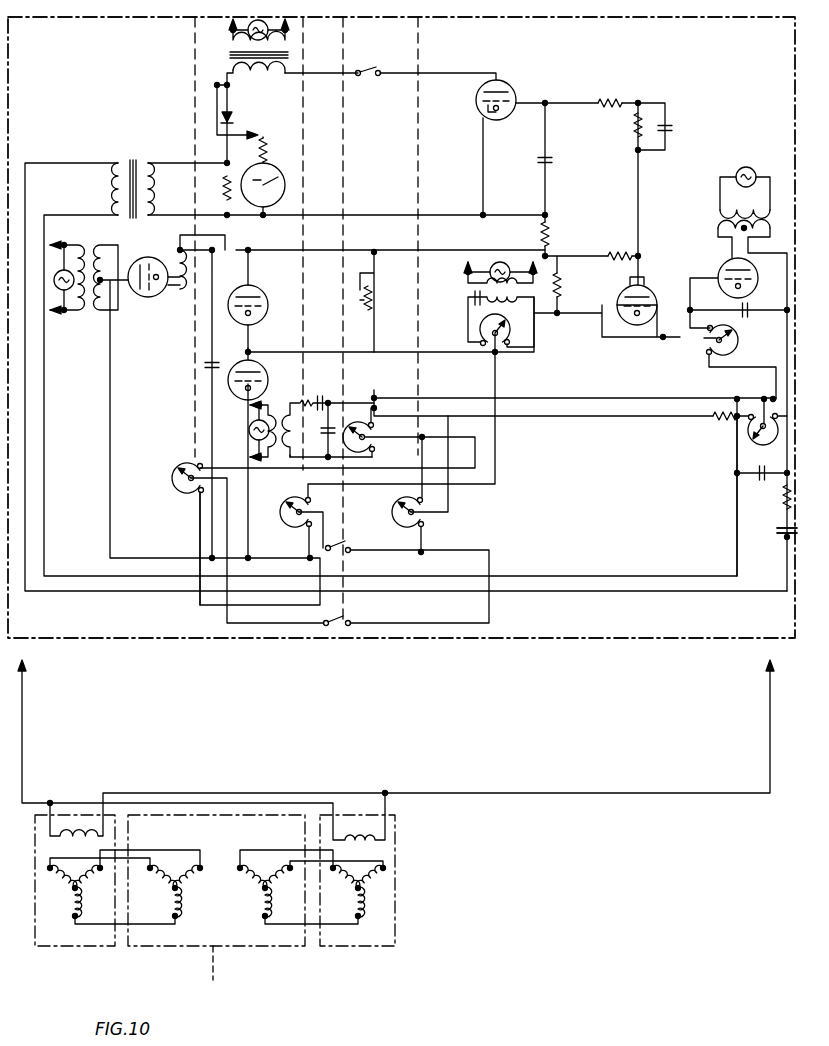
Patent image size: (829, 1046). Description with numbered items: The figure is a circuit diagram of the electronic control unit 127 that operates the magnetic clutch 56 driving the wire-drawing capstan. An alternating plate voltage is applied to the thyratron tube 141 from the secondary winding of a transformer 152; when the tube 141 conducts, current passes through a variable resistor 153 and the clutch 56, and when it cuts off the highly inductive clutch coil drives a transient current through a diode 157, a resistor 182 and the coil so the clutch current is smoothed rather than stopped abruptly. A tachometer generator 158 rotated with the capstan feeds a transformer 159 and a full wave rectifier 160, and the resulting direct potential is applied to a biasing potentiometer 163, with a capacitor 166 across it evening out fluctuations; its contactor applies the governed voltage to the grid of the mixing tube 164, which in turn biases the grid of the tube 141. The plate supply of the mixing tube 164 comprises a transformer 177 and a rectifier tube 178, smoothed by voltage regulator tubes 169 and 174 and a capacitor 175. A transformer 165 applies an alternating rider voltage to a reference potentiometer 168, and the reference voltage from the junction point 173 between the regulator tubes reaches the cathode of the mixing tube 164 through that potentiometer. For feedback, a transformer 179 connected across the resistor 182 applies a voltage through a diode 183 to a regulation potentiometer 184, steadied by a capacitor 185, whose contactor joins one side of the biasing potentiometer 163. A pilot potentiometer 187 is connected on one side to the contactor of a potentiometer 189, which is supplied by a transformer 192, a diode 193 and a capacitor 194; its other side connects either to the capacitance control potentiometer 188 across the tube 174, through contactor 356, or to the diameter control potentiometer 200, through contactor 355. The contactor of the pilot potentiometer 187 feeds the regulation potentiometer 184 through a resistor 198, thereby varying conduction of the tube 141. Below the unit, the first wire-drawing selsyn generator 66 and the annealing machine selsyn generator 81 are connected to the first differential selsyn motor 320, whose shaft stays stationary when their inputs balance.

The transformer 152 is at (221, 57).
The diode 157 is at (222, 121).
The variable resistor 153 is at (270, 142).
The magnetic clutch 56 is at (281, 178).
The transformer 179 is at (130, 157).
The resistor 182 is at (222, 189).
The thyratron tube 141 is at (514, 92).
The tachometer generator 158 is at (748, 167).
The transformer 159 is at (710, 217).
The full wave rectifier 160 is at (730, 262).
The mixing tube 164 is at (650, 290).
The transformer 165 is at (477, 288).
The reference potentiometer 168 is at (475, 327).
The voltage regulator tube 169 is at (262, 292).
The junction point 173 is at (250, 349).
The capacitor 175 is at (210, 365).
The voltage regulator tube 174 is at (228, 386).
The transformer 177 is at (88, 275).
The rectifier tube 178 is at (150, 298).
The transformer 192 is at (279, 450).
The capacitor 194 is at (353, 462).
The diode 193 is at (320, 400).
The potentiometer 189 is at (372, 427).
The capacitance control potentiometer 188 is at (287, 527).
The pilot potentiometer 187 is at (395, 523).
The diameter control potentiometer 200 is at (177, 492).
The contactor 356 is at (347, 555).
The contactor 355 is at (346, 621).
The capacitor 166 is at (748, 318).
The biasing potentiometer 163 is at (712, 366).
The resistor 198 is at (711, 421).
The regulation potentiometer 184 is at (752, 437).
The capacitor 185 is at (754, 477).
The diode 183 is at (778, 537).
The electronic control unit 127 is at (567, 645).
The first wire-drawing selsyn generator 66 is at (95, 950).
The first differential selsyn motor 320 is at (282, 950).
The annealing machine selsyn generator 81 is at (368, 950).